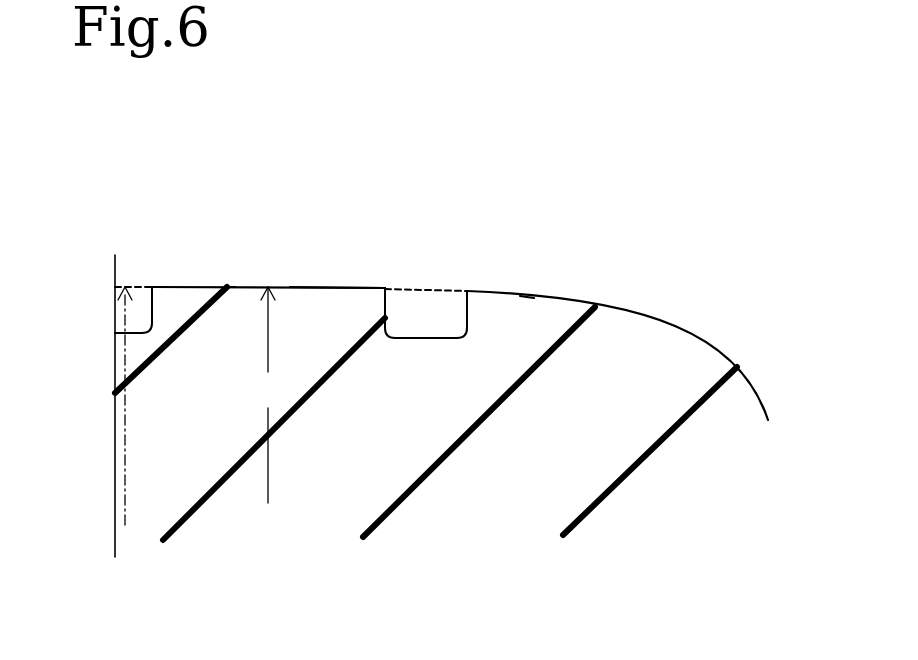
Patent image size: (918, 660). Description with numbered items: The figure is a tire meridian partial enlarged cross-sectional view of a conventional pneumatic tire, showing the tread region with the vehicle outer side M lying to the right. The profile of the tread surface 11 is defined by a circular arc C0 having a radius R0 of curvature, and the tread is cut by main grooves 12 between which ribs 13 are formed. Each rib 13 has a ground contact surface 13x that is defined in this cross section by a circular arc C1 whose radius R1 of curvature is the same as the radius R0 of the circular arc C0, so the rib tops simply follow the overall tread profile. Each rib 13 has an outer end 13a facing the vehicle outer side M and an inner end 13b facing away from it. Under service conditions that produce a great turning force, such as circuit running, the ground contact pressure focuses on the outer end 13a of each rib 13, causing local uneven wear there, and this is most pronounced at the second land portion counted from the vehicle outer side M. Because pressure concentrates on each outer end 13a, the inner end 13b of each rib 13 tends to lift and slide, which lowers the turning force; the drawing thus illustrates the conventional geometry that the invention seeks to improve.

The tread surface 11 is at (348, 287).
The main groove 12 is at (165, 300).
The rib 13 is at (308, 303).
The outer end 13a is at (373, 290).
The inner end 13b is at (140, 321).
The ground contact surface 13x is at (290, 287).
The circular arc C0 is at (137, 273).
The circular arc C1 is at (232, 290).
The radius of curvature R0 is at (136, 407).
The radius of curvature R1 is at (268, 395).
The vehicle outer side M is at (815, 336).